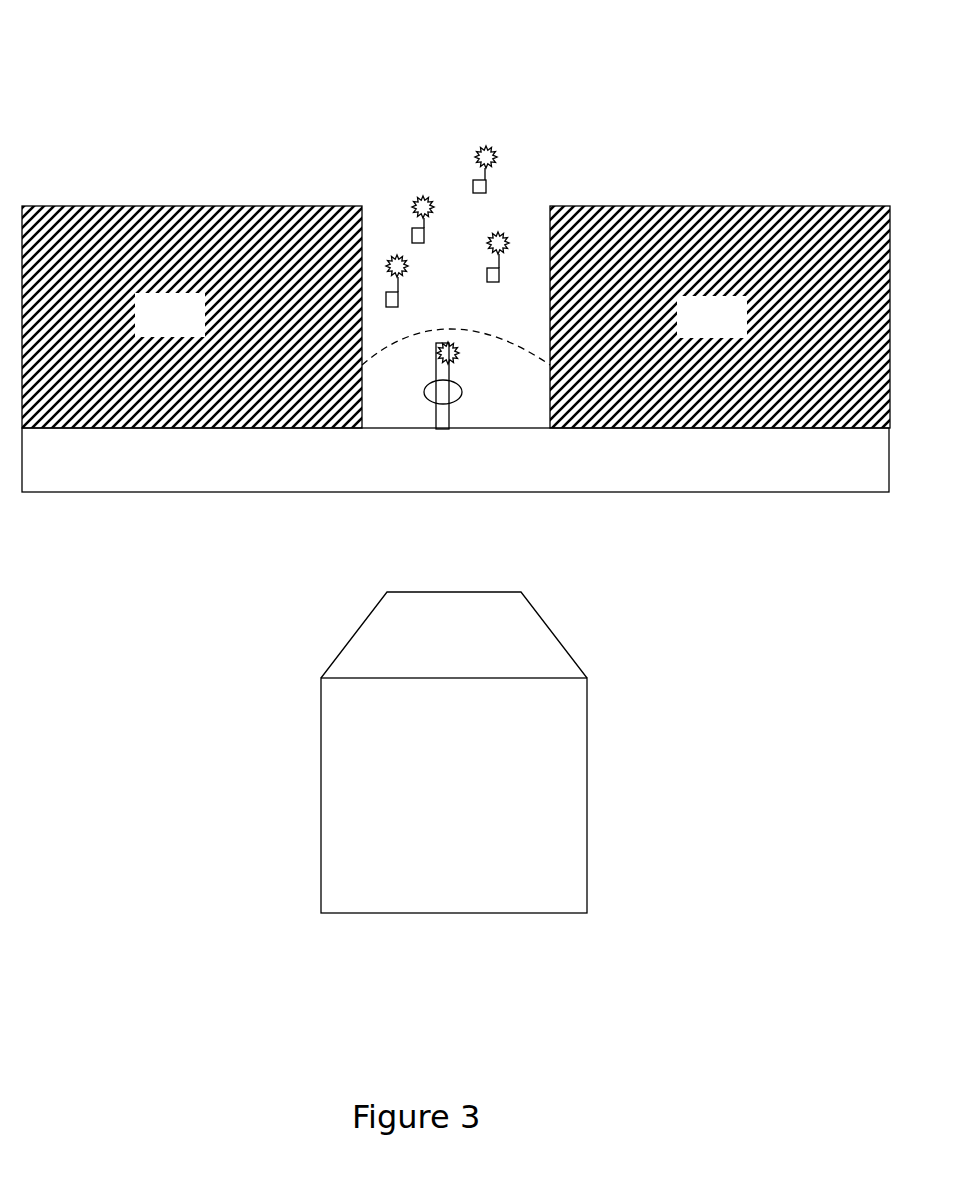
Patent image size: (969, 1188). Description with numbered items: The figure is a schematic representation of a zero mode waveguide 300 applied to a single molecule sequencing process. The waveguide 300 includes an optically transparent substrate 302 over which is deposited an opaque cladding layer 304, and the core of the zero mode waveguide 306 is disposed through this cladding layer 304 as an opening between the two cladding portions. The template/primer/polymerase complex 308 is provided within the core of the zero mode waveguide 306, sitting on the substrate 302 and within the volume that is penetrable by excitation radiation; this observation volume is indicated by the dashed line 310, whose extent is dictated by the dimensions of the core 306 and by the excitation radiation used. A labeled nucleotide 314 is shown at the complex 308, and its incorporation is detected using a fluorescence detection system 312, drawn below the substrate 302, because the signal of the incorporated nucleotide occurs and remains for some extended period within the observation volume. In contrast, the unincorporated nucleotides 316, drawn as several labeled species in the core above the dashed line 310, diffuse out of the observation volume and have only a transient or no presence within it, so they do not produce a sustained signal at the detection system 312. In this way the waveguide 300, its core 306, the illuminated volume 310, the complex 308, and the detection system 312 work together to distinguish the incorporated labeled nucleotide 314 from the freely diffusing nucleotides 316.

The waveguide 300 is at (98, 68).
The optically transparent substrate 302 is at (455, 460).
The opaque cladding layer 304 is at (456, 317).
The core of the zero mode waveguide 306 is at (525, 218).
The template/primer/polymerase complex 308 is at (450, 407).
The dashed line 310 is at (512, 340).
The detection system 312 is at (454, 752).
The labeled nucleotide 314 is at (452, 360).
The unincorporated nucleotides 316 is at (472, 180).